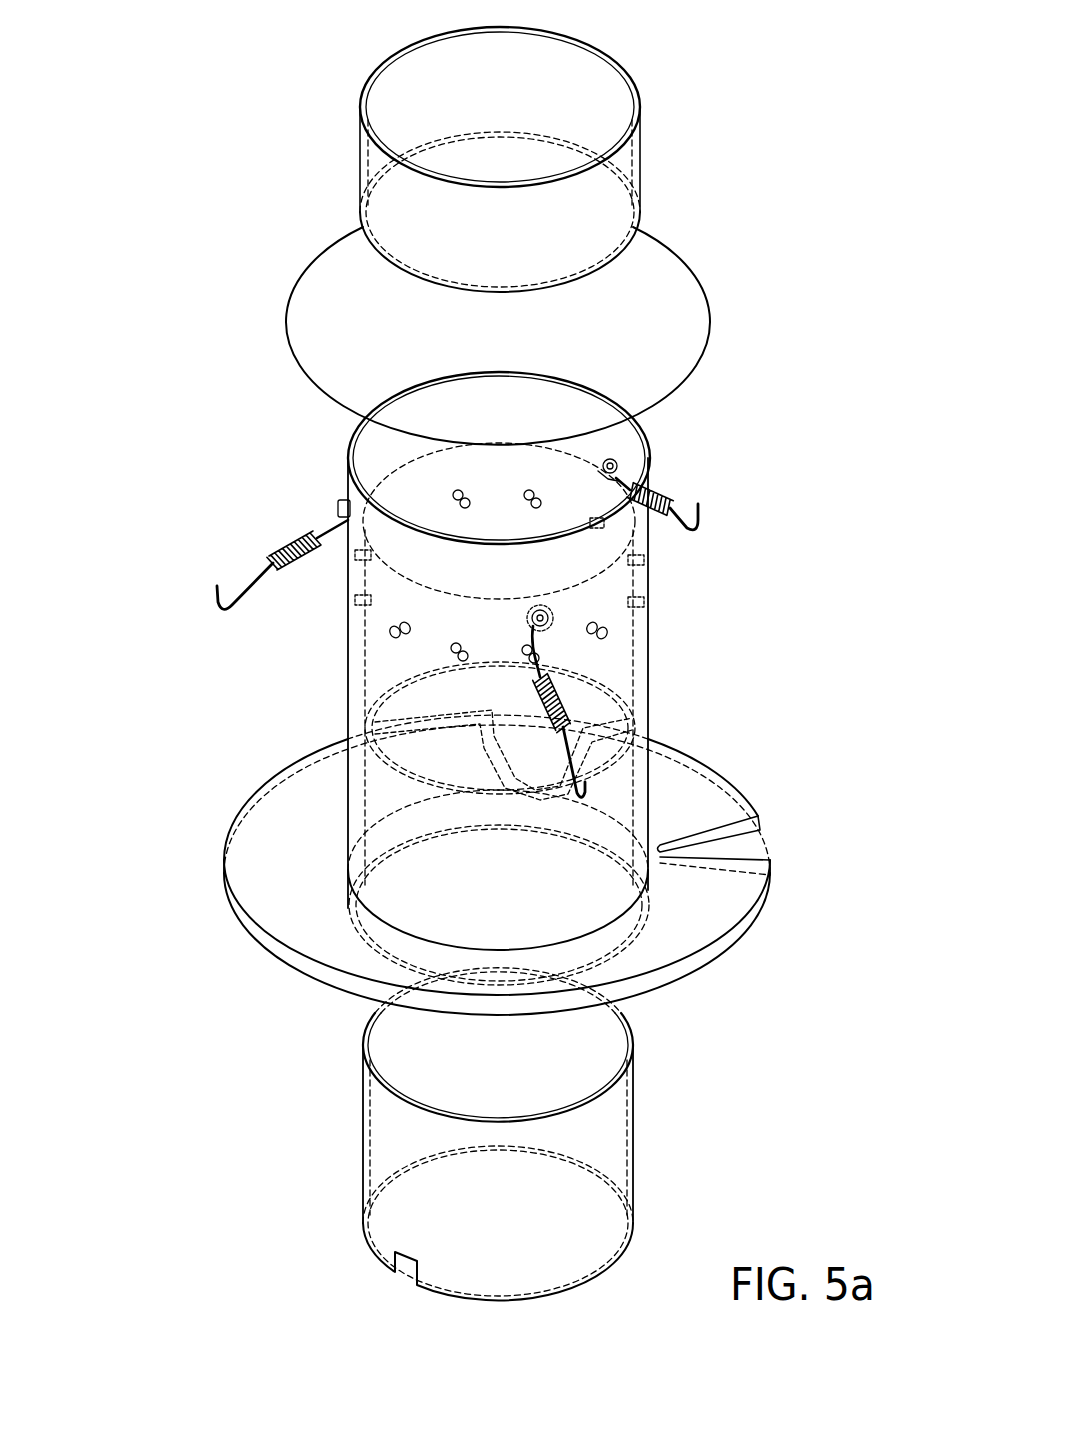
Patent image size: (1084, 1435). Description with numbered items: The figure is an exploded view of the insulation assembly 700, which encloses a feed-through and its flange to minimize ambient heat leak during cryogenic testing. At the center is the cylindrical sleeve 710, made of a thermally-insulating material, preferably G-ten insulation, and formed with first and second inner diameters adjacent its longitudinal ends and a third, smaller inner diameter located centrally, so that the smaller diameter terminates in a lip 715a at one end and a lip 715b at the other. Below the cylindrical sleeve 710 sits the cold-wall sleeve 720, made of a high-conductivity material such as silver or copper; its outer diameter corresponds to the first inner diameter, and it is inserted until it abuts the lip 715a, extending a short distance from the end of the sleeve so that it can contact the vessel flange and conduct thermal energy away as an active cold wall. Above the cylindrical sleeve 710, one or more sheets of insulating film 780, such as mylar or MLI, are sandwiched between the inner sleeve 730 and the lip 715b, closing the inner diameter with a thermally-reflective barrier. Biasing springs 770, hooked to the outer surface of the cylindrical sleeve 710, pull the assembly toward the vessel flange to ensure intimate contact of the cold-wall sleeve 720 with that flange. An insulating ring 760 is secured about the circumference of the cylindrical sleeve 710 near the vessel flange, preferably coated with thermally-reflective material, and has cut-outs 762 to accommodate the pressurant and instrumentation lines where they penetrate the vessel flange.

The insulation assembly 700 is at (126, 198).
The inner sleeve 730 is at (640, 152).
The insulating film 780 is at (692, 298).
The cylindrical sleeve 710 is at (650, 705).
The lip 715b is at (385, 476).
The lip 715a is at (372, 800).
The biasing springs 770 is at (290, 548).
The cut-outs 762 is at (493, 735).
The insulating ring 760 is at (724, 926).
The cold-wall sleeve 720 is at (636, 1110).